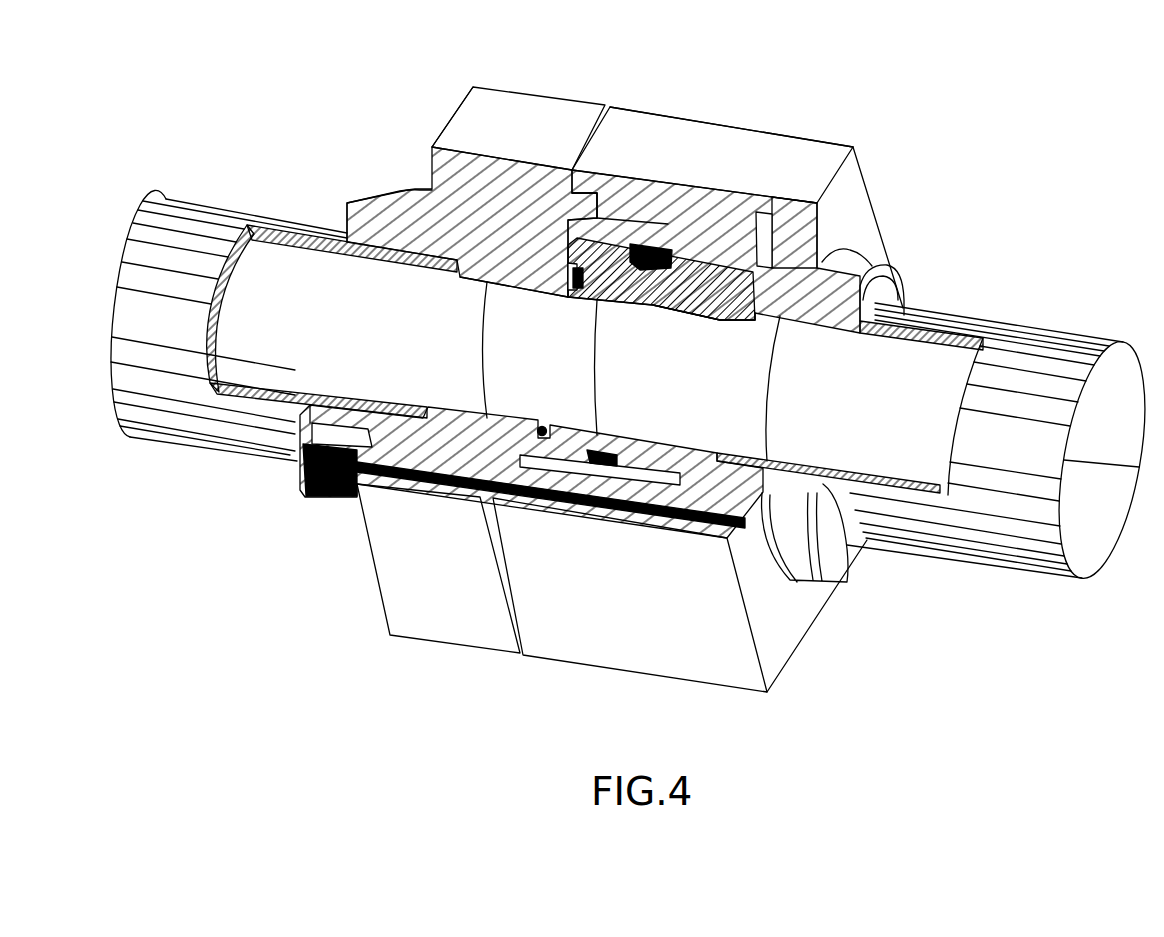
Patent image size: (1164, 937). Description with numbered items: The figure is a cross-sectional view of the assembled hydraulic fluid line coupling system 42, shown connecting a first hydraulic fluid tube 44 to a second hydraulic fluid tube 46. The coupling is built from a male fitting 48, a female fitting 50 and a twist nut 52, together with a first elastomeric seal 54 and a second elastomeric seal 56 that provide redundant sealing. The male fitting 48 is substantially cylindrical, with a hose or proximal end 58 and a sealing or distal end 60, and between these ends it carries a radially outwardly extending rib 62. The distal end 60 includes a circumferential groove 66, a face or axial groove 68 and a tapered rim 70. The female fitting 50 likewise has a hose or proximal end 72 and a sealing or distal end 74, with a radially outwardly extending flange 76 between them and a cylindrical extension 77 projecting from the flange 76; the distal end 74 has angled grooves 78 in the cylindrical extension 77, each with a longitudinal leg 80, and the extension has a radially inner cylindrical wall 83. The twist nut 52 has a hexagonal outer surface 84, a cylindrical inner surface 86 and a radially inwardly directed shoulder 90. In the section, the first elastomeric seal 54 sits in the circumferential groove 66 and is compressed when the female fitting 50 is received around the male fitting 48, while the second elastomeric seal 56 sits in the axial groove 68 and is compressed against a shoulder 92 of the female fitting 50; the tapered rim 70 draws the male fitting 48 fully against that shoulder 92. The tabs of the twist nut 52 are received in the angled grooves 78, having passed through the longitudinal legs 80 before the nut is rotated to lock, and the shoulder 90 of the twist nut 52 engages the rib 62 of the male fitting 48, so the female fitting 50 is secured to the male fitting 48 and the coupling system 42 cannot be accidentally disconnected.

The hydraulic fluid line coupling system 42 is at (856, 92).
The first hydraulic fluid tube 44 is at (193, 222).
The second hydraulic fluid tube 46 is at (1030, 367).
The male fitting 48 is at (906, 276).
The female fitting 50 is at (549, 89).
The twist nut 52 is at (880, 182).
The first elastomeric seal 54 is at (683, 255).
The second elastomeric seal 56 is at (567, 287).
The proximal end 58 is at (893, 252).
The distal end 60 is at (567, 437).
The rib 62 is at (783, 197).
The circumferential groove 66 is at (620, 457).
The axial groove 68 is at (553, 440).
The tapered rim 70 is at (615, 248).
The proximal end 72 is at (380, 192).
The distal end 74 is at (748, 242).
The flange 76 is at (553, 123).
The cylindrical extension 77 is at (590, 222).
The angled grooves 78 is at (762, 306).
The longitudinal leg 80 is at (607, 207).
The radially inner cylindrical wall 83 is at (580, 240).
The hexagonal outer surface 84 is at (682, 162).
The cylindrical inner surface 86 is at (703, 207).
The shoulder 90 is at (820, 590).
The shoulder 92 is at (510, 430).